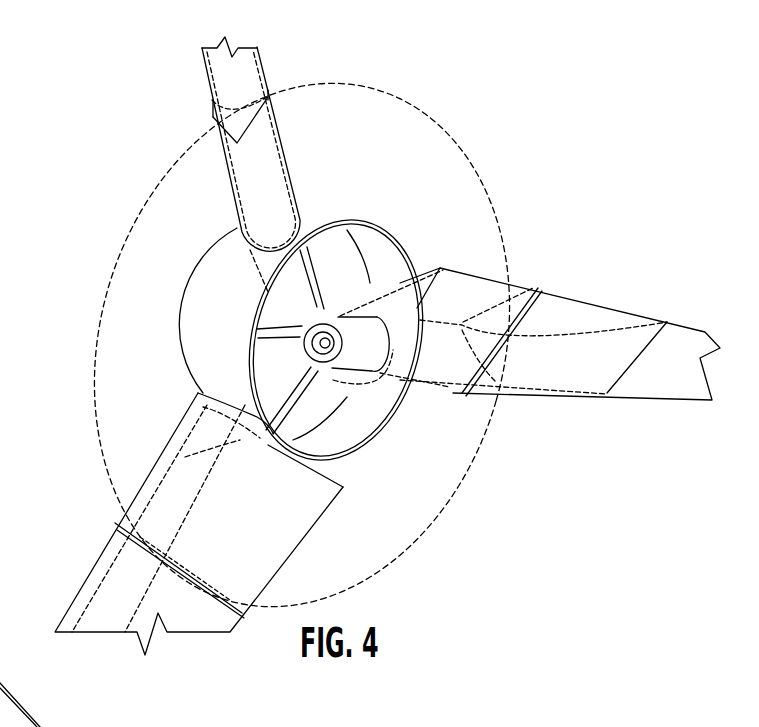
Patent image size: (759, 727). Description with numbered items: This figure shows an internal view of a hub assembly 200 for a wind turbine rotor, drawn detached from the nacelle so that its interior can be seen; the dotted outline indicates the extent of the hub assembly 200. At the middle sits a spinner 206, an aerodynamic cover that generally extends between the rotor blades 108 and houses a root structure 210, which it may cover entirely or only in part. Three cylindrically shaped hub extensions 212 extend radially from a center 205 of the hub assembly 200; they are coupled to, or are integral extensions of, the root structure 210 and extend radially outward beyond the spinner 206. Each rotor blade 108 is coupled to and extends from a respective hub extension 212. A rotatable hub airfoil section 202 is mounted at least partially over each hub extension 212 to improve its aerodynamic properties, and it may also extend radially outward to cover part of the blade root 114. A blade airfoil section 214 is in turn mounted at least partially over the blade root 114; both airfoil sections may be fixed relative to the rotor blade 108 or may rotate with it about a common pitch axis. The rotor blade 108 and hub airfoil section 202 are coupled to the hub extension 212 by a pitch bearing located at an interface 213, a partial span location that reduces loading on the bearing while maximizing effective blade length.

The rotor blade 108 is at (686, 325).
The blade root 114 is at (530, 360).
The hub assembly 200 is at (483, 187).
The hub airfoil section 202 is at (291, 168).
The center 205 is at (282, 337).
The spinner 206 is at (407, 257).
The root structure 210 is at (308, 392).
The hub extension 212 is at (497, 383).
The interface 213 is at (106, 521).
The blade airfoil section 214 is at (212, 88).